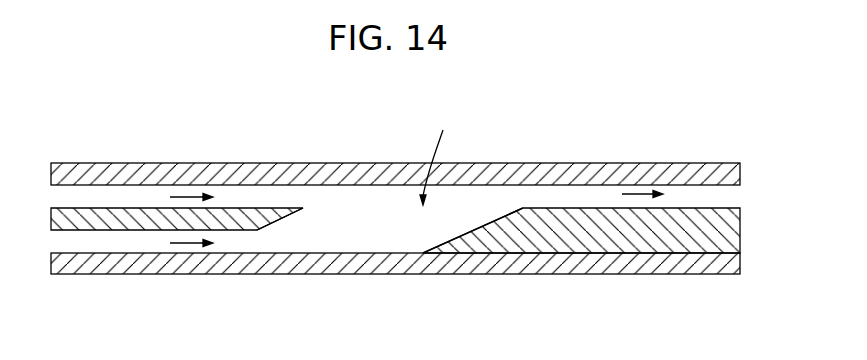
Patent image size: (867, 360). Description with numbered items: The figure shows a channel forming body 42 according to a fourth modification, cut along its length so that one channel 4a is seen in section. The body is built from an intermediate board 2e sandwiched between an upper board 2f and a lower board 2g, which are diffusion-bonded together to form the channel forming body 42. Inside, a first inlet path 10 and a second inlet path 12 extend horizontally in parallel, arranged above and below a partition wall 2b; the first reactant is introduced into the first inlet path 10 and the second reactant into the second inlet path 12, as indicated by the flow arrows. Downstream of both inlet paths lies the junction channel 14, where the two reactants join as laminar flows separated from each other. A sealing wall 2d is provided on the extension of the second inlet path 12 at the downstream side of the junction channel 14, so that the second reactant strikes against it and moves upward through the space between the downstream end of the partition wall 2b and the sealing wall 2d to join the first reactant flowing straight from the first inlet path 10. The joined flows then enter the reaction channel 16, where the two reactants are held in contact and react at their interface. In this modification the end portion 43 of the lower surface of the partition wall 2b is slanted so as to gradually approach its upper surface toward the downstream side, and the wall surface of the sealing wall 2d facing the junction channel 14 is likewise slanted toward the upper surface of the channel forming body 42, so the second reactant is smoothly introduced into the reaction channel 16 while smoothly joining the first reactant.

The channel forming body 42 is at (428, 211).
The first inlet path 10 is at (83, 197).
The second inlet path 12 is at (96, 243).
The partition wall 2b is at (158, 216).
The intermediate board 2e is at (740, 228).
The sealing wall 2d is at (481, 227).
The upper board 2f is at (505, 163).
The lower board 2g is at (622, 274).
The channel 4a is at (437, 155).
The junction channel 14 is at (395, 218).
The reaction channel 16 is at (583, 197).
The end portion 43 is at (268, 221).